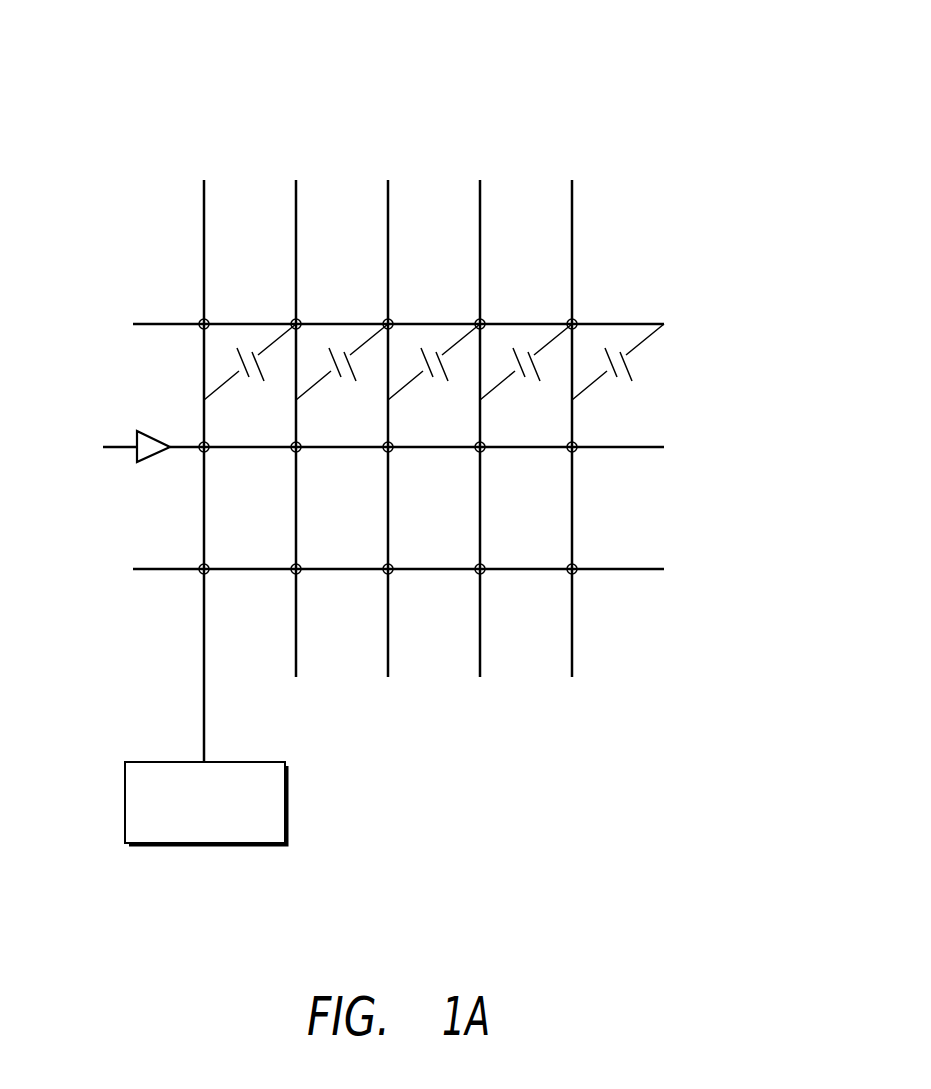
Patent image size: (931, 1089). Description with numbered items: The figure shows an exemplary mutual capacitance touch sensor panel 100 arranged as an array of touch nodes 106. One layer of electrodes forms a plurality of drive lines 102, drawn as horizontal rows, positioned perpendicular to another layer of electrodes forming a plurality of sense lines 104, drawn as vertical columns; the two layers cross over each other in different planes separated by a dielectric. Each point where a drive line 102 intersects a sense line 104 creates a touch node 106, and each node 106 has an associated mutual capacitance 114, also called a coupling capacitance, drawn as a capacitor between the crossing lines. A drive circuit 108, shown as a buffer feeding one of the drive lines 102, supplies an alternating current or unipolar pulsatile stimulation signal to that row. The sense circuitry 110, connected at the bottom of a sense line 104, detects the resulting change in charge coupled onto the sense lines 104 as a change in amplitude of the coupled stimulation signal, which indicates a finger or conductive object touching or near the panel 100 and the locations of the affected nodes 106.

The touch sensor panel 100 is at (647, 133).
The drive line 102 is at (151, 323).
The sense line 104 is at (205, 208).
The touch node 106 is at (205, 323).
The drive circuit 108 is at (152, 457).
The sense circuitry 110 is at (263, 760).
The mutual capacitance 114 is at (237, 375).